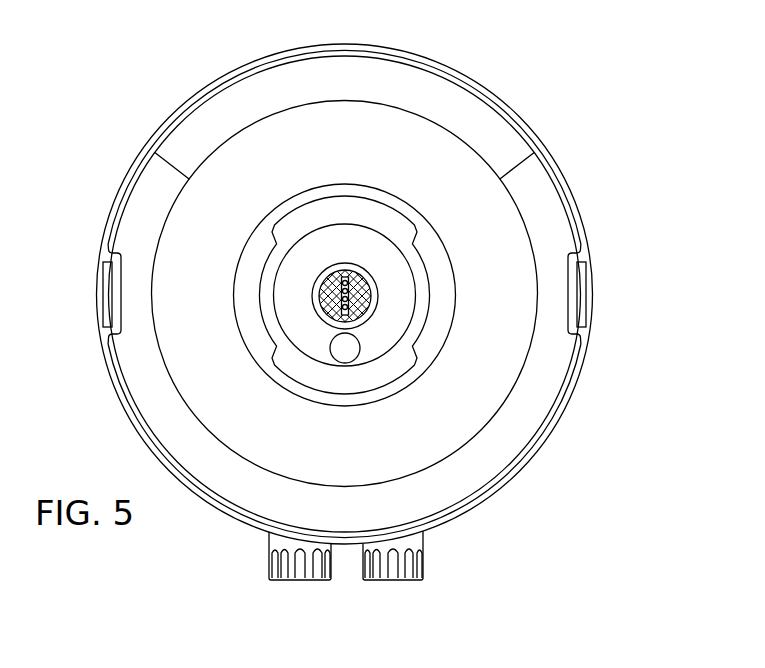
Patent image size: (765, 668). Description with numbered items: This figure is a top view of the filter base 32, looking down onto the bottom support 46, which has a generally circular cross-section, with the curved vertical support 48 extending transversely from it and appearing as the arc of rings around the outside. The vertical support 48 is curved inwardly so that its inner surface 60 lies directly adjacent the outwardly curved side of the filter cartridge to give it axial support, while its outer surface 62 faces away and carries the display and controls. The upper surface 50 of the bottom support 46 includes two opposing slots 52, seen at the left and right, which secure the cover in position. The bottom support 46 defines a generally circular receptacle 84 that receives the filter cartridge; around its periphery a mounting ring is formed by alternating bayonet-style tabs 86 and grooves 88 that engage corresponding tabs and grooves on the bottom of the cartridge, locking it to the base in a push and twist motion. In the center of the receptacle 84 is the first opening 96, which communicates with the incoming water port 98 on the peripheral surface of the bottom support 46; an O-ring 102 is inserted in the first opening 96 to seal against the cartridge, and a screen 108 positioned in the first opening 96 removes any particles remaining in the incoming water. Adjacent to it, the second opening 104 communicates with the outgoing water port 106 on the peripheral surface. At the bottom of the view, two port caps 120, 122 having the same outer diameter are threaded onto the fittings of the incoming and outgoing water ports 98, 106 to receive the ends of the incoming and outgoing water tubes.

The filter base 32 is at (552, 82).
The bottom support 46 is at (541, 449).
The vertical support 48 is at (430, 96).
The upper surface 50 is at (543, 212).
The opposing slots 52 is at (586, 288).
The inner surface 60 is at (305, 107).
The outer surface 62 is at (223, 73).
The receptacle 84 is at (430, 247).
The bayonet-style tabs 86 is at (251, 268).
The grooves 88 is at (378, 220).
The first opening 96 is at (353, 268).
The incoming water port 98 is at (256, 565).
The O-ring 102 is at (380, 293).
The second opening 104 is at (359, 352).
The outgoing water port 106 is at (438, 566).
The screen 108 is at (332, 303).
The port cap 120 is at (301, 574).
The port cap 122 is at (393, 574).